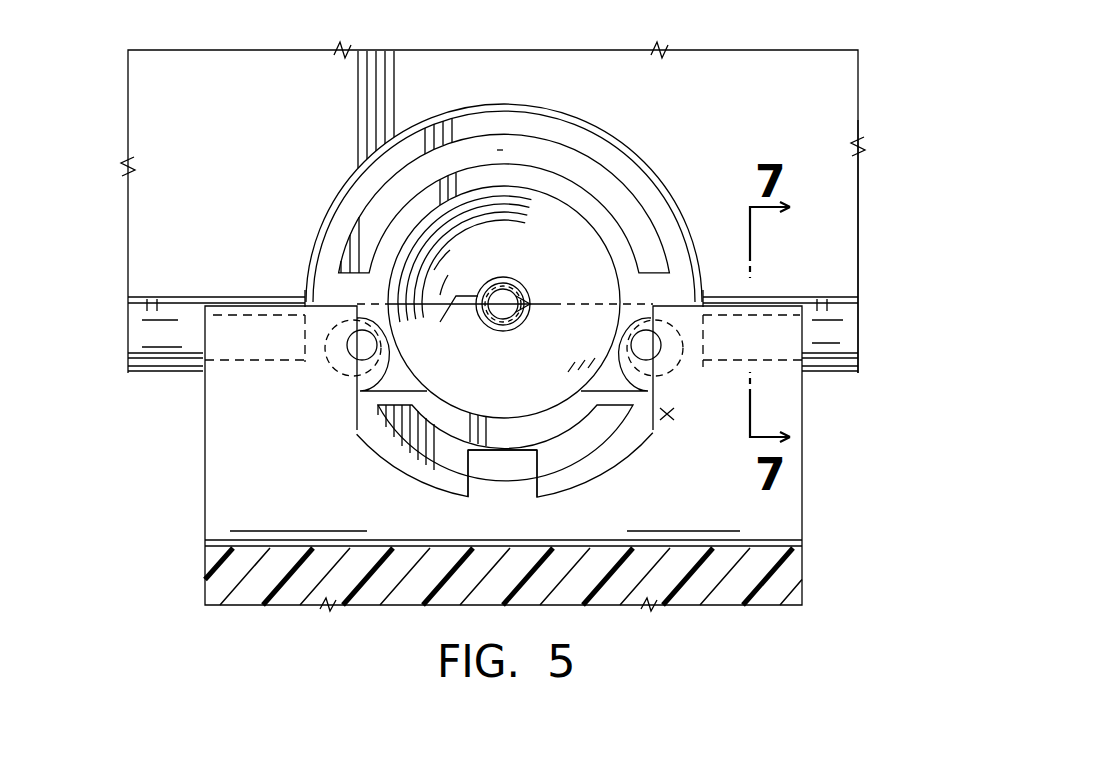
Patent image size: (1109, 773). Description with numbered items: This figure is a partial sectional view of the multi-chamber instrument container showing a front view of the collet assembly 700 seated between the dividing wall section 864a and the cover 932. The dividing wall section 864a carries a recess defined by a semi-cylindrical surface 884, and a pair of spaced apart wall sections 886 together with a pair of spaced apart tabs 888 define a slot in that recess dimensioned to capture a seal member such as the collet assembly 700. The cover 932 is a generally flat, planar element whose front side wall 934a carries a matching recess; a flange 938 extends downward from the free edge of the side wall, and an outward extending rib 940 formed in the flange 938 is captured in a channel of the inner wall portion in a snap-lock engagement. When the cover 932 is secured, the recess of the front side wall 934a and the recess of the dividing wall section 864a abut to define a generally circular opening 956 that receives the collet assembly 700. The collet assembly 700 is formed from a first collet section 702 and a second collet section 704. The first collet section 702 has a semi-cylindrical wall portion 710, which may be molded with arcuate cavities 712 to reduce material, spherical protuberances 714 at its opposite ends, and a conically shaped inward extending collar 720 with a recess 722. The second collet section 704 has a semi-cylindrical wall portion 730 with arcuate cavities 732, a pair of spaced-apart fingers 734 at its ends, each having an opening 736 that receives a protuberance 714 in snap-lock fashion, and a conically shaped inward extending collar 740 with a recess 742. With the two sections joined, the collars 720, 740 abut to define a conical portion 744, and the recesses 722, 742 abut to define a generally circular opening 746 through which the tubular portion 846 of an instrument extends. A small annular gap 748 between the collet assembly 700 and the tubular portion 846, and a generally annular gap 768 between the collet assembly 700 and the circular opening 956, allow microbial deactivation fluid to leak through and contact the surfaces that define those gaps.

The collet assembly 700 is at (680, 172).
The first collet section 702 is at (370, 467).
The second collet section 704 is at (456, 106).
The semi-cylindrical wall portion 710 is at (428, 474).
The arcuate cavities 712 is at (420, 442).
The protuberances 714 is at (360, 332).
The inward extending collar 720 is at (497, 398).
The recess 722 is at (490, 320).
The semi-cylindrical wall portion 730 is at (540, 120).
The arcuate cavities 732 is at (500, 145).
The fingers 734 is at (362, 382).
The openings 736 is at (363, 347).
The inward extending collar 740 is at (417, 250).
The recess 742 is at (507, 292).
The conical portion 744 is at (442, 222).
The circular opening 746 is at (505, 268).
The annular gap 748 is at (440, 322).
The annular gap 768 is at (600, 132).
The tubular portion 846 is at (523, 313).
The dividing wall section 864a is at (222, 445).
The semi-cylindrical surface 884 is at (612, 470).
The wall sections 886 is at (323, 328).
The tabs 888 is at (520, 460).
The cover 932 is at (864, 118).
The front side wall 934a is at (843, 195).
The flange 938 is at (847, 370).
The rib 940 is at (845, 338).
The circular opening 956 is at (412, 114).